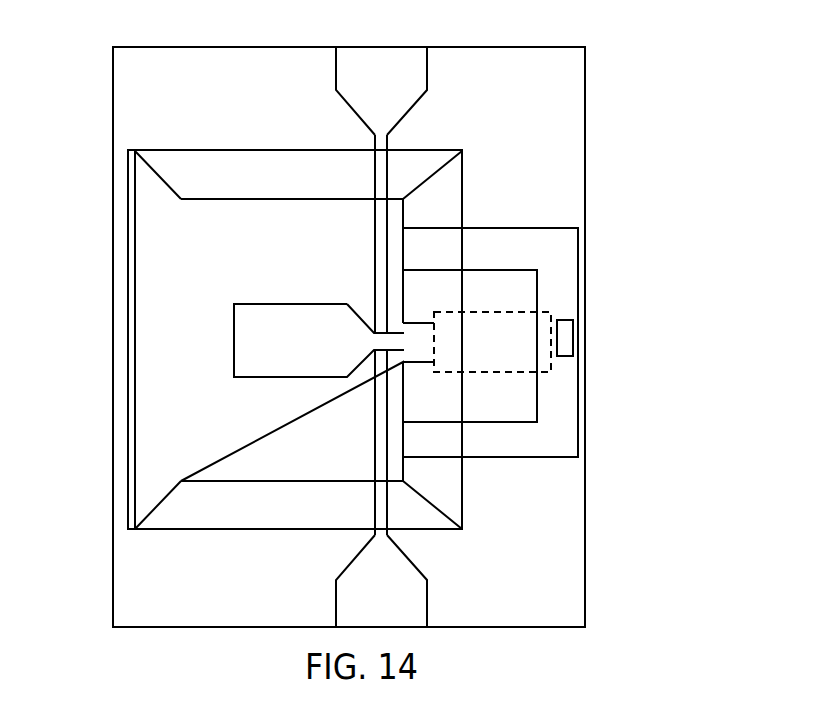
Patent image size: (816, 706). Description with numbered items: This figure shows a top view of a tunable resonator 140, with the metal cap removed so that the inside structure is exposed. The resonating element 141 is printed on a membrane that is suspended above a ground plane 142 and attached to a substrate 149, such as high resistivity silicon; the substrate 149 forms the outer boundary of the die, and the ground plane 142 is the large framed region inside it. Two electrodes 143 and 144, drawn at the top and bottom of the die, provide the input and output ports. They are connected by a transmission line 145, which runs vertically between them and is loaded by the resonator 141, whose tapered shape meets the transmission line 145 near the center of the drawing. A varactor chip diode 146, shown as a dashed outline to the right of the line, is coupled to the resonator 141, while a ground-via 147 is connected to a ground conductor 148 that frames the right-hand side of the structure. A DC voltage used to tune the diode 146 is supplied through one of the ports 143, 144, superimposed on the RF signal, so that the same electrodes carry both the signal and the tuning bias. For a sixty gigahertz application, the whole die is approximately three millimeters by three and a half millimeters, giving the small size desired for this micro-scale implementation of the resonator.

The tunable resonator 140 is at (614, 38).
The resonating element 141 is at (311, 359).
The ground plane 142 is at (291, 255).
The electrode 143 is at (400, 99).
The electrode 144 is at (400, 609).
The transmission line 145 is at (382, 440).
The varactor chip diode 146 is at (514, 356).
The ground-via 147 is at (565, 333).
The ground conductor 148 is at (558, 424).
The substrate 149 is at (158, 99).